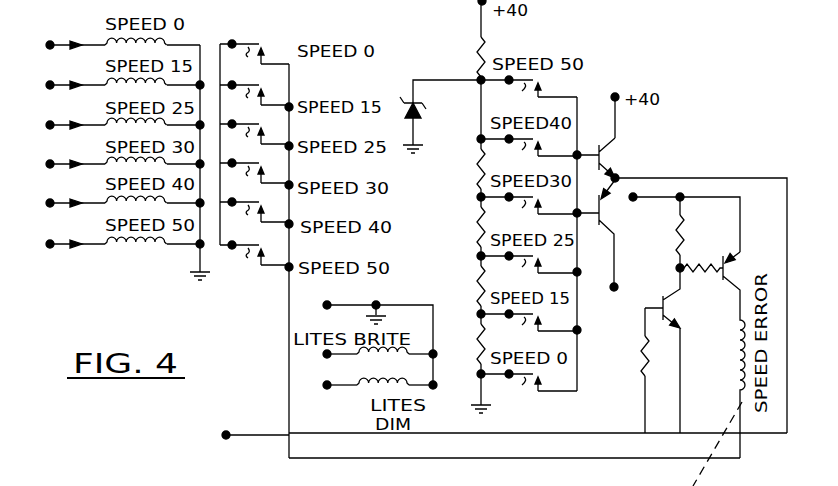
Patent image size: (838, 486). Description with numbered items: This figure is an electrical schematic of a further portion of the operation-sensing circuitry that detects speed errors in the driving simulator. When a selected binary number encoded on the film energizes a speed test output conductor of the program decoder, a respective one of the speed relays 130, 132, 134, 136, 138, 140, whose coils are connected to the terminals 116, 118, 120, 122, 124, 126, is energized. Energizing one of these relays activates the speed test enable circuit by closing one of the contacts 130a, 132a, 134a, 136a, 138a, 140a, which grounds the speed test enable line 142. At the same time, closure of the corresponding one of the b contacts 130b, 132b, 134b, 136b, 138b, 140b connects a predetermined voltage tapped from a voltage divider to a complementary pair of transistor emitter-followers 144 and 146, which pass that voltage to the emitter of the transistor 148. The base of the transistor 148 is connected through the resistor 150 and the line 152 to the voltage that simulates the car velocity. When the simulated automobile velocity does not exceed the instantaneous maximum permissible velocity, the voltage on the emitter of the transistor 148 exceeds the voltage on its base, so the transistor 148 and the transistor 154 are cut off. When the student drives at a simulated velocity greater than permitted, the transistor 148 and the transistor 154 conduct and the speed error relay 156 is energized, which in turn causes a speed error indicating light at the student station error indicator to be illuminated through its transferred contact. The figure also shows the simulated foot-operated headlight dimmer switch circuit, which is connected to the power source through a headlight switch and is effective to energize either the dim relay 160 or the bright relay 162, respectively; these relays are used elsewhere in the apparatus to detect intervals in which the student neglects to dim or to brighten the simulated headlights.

The terminal 116 is at (59, 45).
The terminal 118 is at (59, 85).
The terminal 120 is at (59, 125).
The terminal 122 is at (59, 164).
The terminal 124 is at (59, 203).
The terminal 126 is at (59, 244).
The speed relay 130 is at (166, 47).
The speed relay 132 is at (166, 87).
The speed relay 134 is at (166, 127).
The speed relay 136 is at (166, 166).
The speed relay 138 is at (166, 205).
The speed relay 140 is at (166, 246).
The relay contact 130a is at (243, 42).
The relay contact 132a is at (252, 83).
The relay contact 134a is at (255, 121).
The relay contact 136a is at (255, 160).
The relay contact 138a is at (255, 199).
The relay contact 140a is at (255, 242).
The relay contact 130b is at (540, 373).
The relay contact 132b is at (479, 312).
The relay contact 134b is at (479, 256).
The relay contact 136b is at (479, 196).
The relay contact 138b is at (540, 141).
The relay contact 140b is at (534, 78).
The speed test enable line 142 is at (584, 447).
The transistor emitter-follower 144 is at (608, 153).
The transistor emitter-follower 146 is at (605, 206).
The transistor 148 is at (648, 297).
The resistor 150 is at (643, 372).
The line 152 is at (282, 437).
The transistor 154 is at (726, 256).
The speed error relay 156 is at (735, 370).
The dim relay 160 is at (362, 392).
The bright relay 162 is at (363, 361).